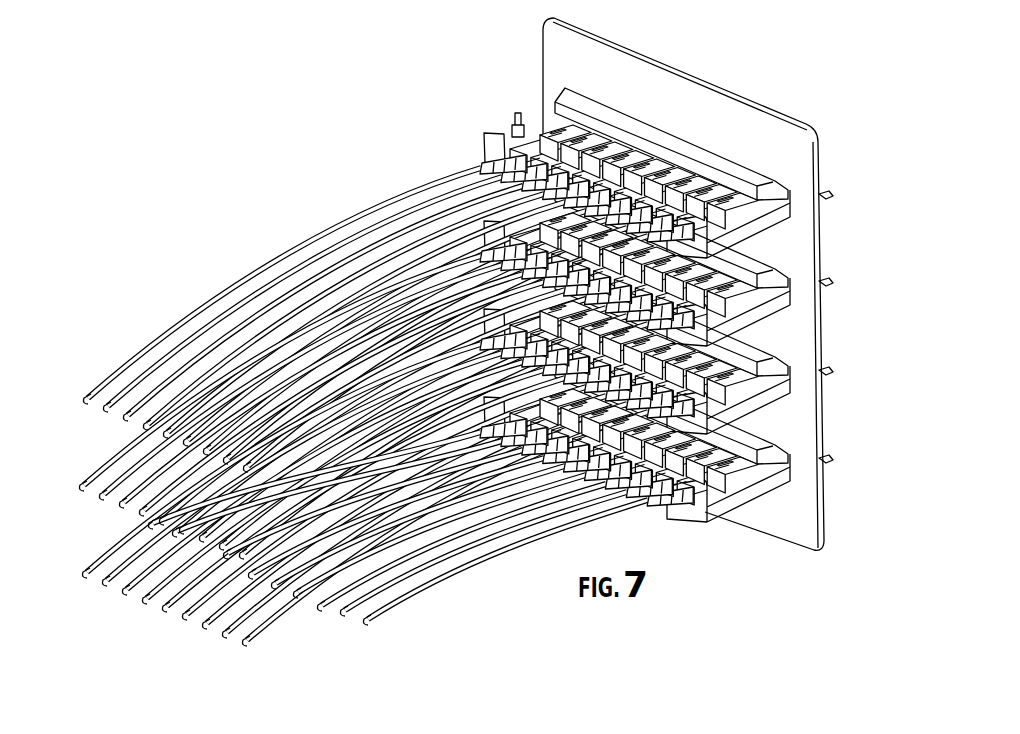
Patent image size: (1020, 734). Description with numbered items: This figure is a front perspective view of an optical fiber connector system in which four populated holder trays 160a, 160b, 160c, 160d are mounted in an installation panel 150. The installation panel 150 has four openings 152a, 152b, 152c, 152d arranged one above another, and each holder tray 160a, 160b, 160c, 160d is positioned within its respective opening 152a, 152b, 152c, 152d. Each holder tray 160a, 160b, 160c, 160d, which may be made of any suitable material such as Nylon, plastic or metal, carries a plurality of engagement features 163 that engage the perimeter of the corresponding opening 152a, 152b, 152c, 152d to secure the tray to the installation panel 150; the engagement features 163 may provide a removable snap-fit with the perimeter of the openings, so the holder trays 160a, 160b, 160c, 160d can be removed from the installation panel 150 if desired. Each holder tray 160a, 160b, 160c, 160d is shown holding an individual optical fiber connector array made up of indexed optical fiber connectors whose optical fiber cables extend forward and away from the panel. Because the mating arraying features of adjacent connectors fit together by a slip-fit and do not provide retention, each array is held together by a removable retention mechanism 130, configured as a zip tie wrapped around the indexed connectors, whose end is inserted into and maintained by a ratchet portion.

The removable retention mechanism 130 is at (510, 113).
The installation panel 150 is at (822, 157).
The opening 152a is at (790, 198).
The opening 152b is at (790, 286).
The opening 152c is at (790, 374).
The opening 152d is at (790, 462).
The holder tray 160a is at (741, 222).
The holder tray 160b is at (741, 310).
The holder tray 160c is at (741, 398).
The holder tray 160d is at (741, 486).
The engagement features 163 is at (843, 461).